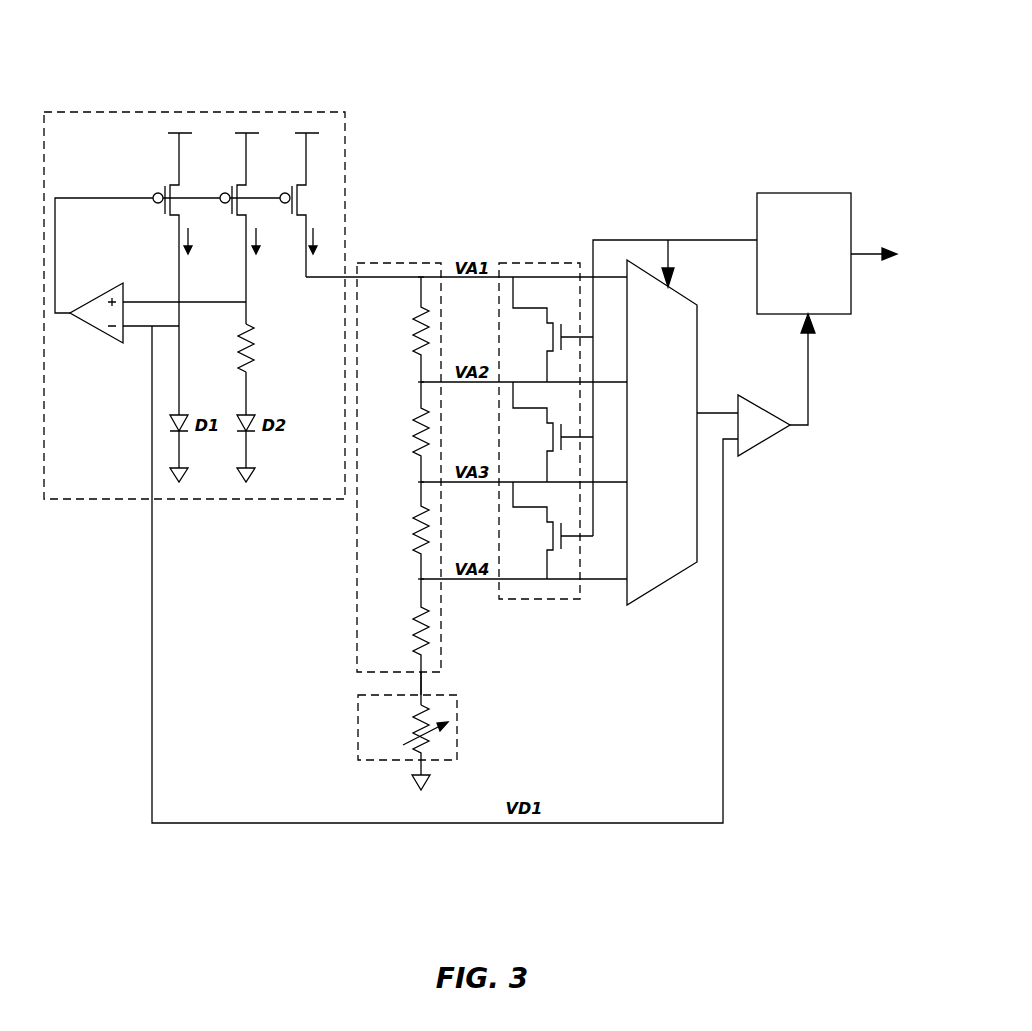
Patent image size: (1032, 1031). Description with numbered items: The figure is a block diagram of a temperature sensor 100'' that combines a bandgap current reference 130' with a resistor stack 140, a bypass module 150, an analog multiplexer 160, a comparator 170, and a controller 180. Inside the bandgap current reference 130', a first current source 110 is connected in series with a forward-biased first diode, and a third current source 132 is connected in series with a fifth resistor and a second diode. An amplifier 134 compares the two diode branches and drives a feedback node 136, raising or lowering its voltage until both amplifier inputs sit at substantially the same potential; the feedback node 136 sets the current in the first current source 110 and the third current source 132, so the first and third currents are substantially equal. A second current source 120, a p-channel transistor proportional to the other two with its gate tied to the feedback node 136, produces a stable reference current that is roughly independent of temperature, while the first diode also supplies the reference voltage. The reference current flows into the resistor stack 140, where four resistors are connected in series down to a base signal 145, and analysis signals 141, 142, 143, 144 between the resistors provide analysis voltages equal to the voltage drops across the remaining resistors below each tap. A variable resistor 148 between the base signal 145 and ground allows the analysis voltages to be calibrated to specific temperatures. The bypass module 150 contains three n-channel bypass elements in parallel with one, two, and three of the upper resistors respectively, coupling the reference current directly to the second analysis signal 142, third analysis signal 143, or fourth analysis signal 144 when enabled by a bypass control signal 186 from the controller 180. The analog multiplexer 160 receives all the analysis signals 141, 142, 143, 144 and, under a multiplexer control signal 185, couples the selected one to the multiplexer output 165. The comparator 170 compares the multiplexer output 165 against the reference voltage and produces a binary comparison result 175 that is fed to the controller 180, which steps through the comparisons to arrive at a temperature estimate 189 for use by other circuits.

The temperature sensor 100'' is at (661, 44).
The bandgap current reference 130' is at (194, 278).
The first current source 110 is at (177, 183).
The third current source 132 is at (243, 183).
The second current source 120 is at (303, 183).
The feedback node 136 is at (100, 197).
The amplifier 134 is at (107, 342).
The resistor stack 140 is at (395, 262).
The first analysis signal 141 is at (421, 281).
The second analysis signal 142 is at (421, 386).
The third analysis signal 143 is at (421, 484).
The fourth analysis signal 144 is at (421, 581).
The base signal 145 is at (421, 678).
The variable resistor 148 is at (367, 736).
The bypass module 150 is at (535, 262).
The analog multiplexer 160 is at (668, 580).
The multiplexer output 165 is at (722, 412).
The comparator 170 is at (765, 443).
The comparison result 175 is at (808, 378).
The controller 180 is at (796, 193).
The multiplexer control signal 185 is at (673, 256).
The bypass control signal 186 is at (591, 239).
The temperature estimate 189 is at (866, 251).